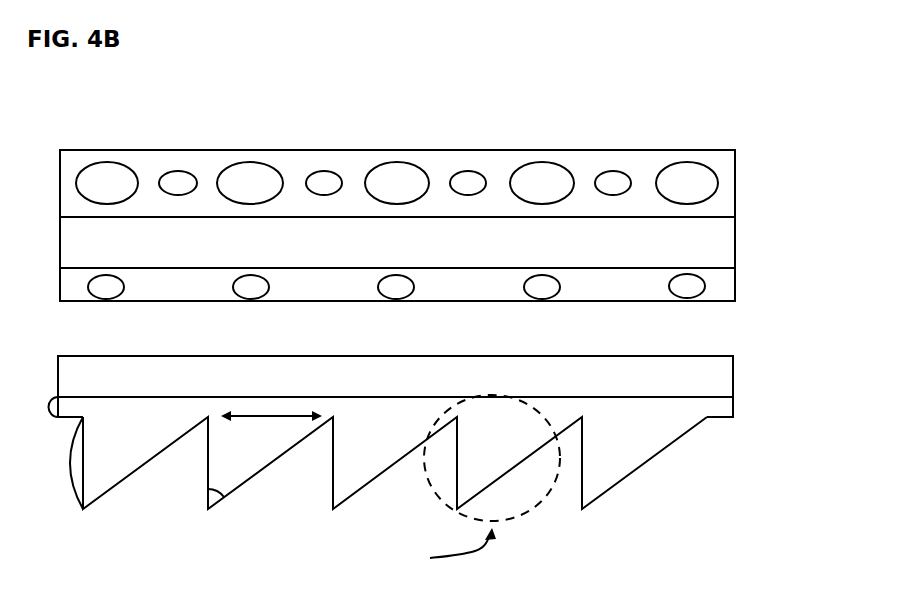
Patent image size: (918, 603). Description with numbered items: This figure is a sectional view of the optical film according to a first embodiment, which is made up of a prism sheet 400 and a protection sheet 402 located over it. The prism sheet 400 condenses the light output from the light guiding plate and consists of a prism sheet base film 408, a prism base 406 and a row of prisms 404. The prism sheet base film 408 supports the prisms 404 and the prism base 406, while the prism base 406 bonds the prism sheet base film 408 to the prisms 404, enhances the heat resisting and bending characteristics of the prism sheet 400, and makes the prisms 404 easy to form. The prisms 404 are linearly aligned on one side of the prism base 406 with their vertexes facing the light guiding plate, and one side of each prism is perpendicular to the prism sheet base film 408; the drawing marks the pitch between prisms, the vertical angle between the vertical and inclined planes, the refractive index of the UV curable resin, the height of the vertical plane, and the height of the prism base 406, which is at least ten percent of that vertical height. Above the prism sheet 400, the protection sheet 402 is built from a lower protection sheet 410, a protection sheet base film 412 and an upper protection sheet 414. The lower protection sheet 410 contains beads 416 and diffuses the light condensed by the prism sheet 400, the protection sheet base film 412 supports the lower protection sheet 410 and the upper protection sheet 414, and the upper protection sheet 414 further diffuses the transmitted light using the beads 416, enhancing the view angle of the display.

The prism sheet 400 is at (450, 441).
The protection sheet 402 is at (459, 188).
The prisms 404 is at (640, 453).
The prism base 406 is at (723, 408).
The prism sheet base film 408 is at (723, 371).
The lower protection sheet 410 is at (725, 275).
The protection sheet base film 412 is at (725, 243).
The upper protection sheet 414 is at (456, 179).
The beads 416 is at (700, 173).